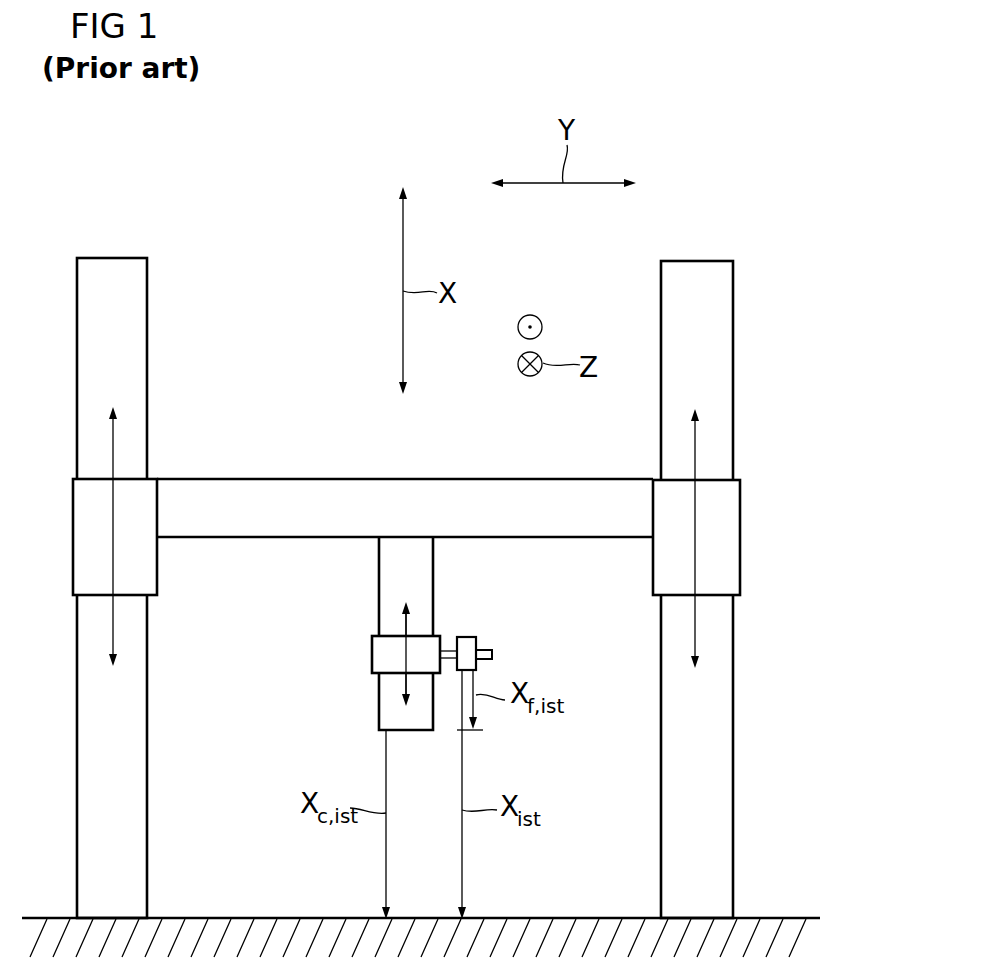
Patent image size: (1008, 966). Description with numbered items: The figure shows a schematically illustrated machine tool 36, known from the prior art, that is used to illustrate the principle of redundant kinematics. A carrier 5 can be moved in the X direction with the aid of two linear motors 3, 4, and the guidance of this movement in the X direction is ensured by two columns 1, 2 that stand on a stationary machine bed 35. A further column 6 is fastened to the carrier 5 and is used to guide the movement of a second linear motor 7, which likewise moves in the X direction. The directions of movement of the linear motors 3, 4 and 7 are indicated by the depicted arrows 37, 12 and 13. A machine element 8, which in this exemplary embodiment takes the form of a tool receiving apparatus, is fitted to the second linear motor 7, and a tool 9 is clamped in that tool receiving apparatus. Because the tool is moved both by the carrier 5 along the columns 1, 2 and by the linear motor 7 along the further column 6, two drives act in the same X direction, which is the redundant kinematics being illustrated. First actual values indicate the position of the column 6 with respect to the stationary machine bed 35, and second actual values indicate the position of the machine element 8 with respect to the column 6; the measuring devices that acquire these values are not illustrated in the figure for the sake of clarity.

The column 1 is at (148, 327).
The column 2 is at (661, 330).
The linear motor 3 is at (73, 540).
The linear motor 4 is at (740, 537).
The carrier 5 is at (325, 479).
The further column 6 is at (433, 586).
The second linear motor 7 is at (372, 651).
The machine element 8 is at (478, 645).
The tool 9 is at (492, 655).
The arrow 12 is at (695, 447).
The arrow 13 is at (400, 628).
The stationary machine bed 35 is at (258, 918).
The machine tool 36 is at (641, 103).
The arrow 37 is at (113, 443).